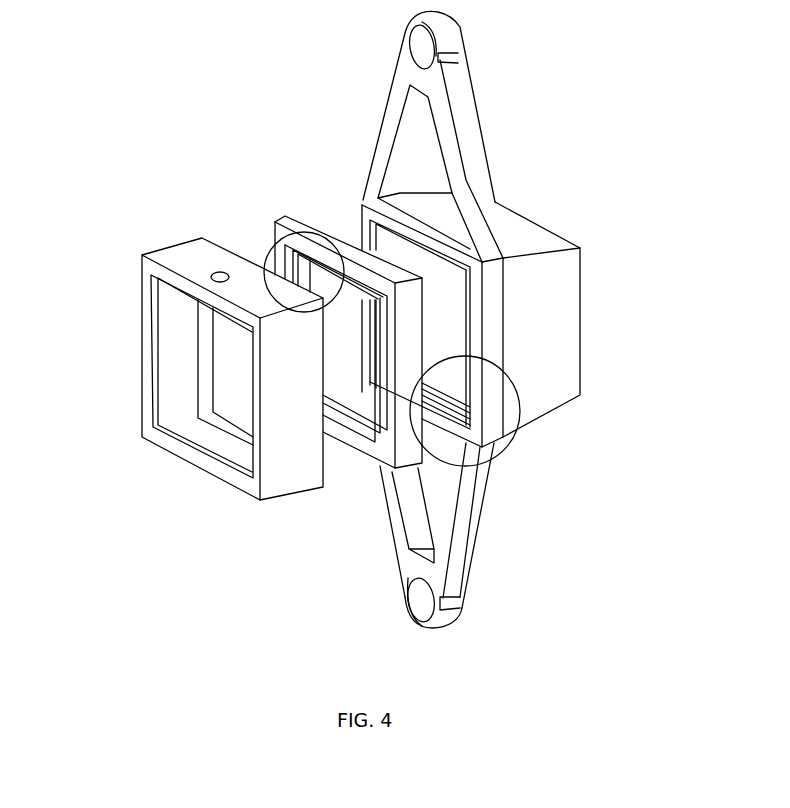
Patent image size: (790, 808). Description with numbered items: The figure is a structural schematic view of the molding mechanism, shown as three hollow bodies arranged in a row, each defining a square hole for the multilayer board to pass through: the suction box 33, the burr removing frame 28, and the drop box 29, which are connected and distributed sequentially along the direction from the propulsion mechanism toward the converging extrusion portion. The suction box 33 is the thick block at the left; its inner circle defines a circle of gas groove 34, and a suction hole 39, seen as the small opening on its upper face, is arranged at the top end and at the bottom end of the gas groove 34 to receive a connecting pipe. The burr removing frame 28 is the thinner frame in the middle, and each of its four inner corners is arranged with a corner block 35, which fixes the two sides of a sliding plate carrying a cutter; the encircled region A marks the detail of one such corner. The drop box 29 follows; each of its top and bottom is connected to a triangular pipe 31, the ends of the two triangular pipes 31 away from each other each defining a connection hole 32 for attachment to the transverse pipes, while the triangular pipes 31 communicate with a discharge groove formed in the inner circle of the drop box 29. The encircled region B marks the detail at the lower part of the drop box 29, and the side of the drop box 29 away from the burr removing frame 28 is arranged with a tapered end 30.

The burr removing frame 28 is at (312, 226).
The drop box 29 is at (493, 317).
The tapered end 30 is at (567, 343).
The triangular pipe 31 is at (470, 518).
The connection hole 32 is at (429, 628).
The suction box 33 is at (191, 262).
The gas groove 34 is at (180, 363).
The corner block 35 is at (276, 236).
The suction hole 39 is at (212, 281).
The detail A is at (328, 236).
The detail B is at (516, 418).